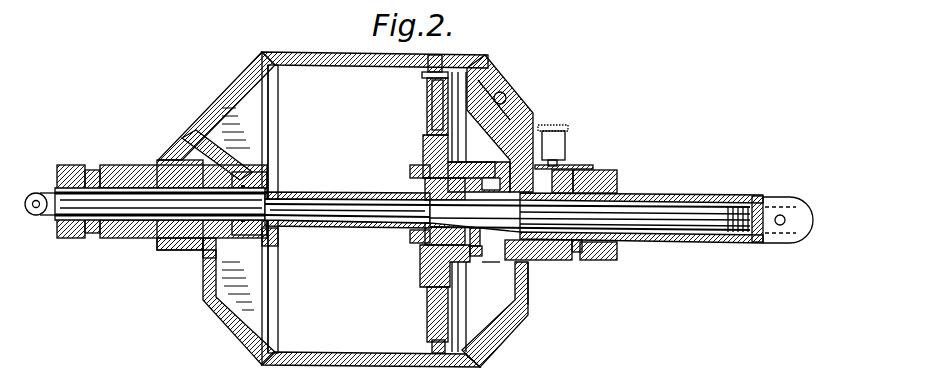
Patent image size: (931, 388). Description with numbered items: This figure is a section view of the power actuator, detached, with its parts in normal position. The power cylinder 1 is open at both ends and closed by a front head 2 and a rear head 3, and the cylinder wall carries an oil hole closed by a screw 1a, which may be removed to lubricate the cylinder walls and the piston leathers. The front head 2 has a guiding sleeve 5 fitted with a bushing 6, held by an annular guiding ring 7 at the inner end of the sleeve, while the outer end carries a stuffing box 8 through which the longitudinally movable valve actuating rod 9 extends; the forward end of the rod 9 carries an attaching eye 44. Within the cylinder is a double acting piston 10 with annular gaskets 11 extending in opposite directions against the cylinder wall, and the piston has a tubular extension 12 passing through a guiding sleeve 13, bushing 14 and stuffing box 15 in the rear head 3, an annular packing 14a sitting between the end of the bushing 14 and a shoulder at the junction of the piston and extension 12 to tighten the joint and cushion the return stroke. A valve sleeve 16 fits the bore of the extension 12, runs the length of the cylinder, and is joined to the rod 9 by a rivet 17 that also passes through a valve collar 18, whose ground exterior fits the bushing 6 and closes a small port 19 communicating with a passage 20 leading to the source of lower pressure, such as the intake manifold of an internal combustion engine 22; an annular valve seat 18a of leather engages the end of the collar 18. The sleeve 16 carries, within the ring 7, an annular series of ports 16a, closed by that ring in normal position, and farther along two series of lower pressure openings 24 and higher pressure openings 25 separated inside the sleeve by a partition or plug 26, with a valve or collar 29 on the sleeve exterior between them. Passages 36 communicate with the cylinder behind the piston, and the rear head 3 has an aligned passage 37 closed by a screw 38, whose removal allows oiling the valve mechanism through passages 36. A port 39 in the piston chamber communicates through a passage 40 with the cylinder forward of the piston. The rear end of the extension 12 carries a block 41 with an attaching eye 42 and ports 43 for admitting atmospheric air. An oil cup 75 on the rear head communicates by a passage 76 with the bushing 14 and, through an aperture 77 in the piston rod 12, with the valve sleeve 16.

The power cylinder 1 is at (315, 53).
The screw 1a is at (426, 74).
The front head 2 is at (226, 98).
The rear head 3 is at (522, 118).
The guiding sleeve 5 is at (160, 160).
The bushing 6 is at (130, 165).
The annular guiding ring 7 is at (278, 175).
The stuffing box 8 is at (72, 165).
The valve actuating rod 9 is at (125, 222).
The double acting piston 10 is at (424, 148).
The annular gaskets 11 is at (446, 72).
The tubular extension 12 is at (652, 195).
The guiding sleeve 13 is at (550, 262).
The bushing 14 is at (568, 262).
The annular packing 14a is at (529, 300).
The stuffing box 15 is at (612, 261).
The valve sleeve 16 is at (350, 229).
The ports 16a is at (308, 199).
The rivet 17 is at (206, 248).
The valve collar 18 is at (180, 246).
The annular valve seat 18a is at (265, 240).
The port 19 is at (248, 170).
The passage 20 is at (196, 136).
The internal combustion engine 22 is at (495, 173).
The lower pressure openings 24 is at (412, 194).
The higher pressure openings 25 is at (478, 238).
The partition or plug 26 is at (410, 238).
The valve or collar 29 is at (494, 262).
The passages 36 is at (455, 176).
The passage 37 is at (495, 104).
The screw 38 is at (503, 94).
The port 39 is at (476, 256).
The passage 40 is at (420, 262).
The block 41 is at (742, 243).
The attaching eye 42 is at (787, 246).
The ports 43 is at (780, 214).
The attaching eye 44 is at (36, 216).
The oil cup 75 is at (566, 142).
The passage 76 is at (576, 167).
The aperture 77 is at (606, 175).